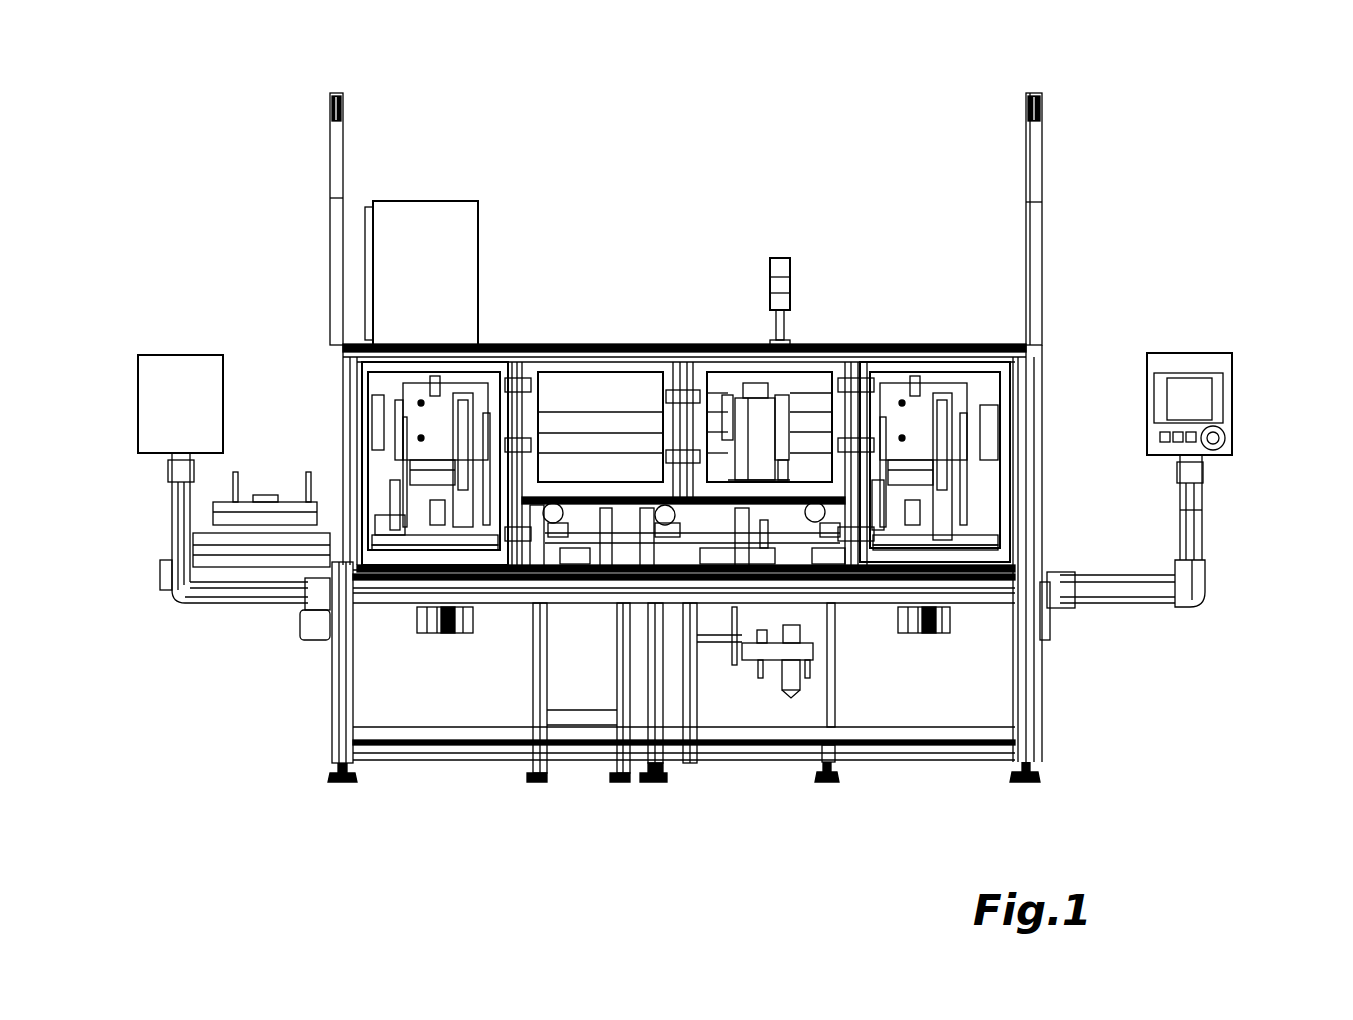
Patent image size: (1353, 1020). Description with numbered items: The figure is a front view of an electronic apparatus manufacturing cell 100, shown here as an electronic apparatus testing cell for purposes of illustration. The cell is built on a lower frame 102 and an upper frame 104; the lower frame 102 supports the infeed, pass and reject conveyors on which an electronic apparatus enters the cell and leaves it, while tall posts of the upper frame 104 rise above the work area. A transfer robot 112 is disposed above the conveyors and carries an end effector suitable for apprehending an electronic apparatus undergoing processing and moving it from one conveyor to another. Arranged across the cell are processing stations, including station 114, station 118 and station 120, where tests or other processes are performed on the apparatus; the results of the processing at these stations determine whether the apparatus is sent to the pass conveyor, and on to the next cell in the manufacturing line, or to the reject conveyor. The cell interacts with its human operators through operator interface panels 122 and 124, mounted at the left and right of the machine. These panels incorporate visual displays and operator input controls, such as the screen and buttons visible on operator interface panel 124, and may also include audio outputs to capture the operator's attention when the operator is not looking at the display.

The electronic apparatus manufacturing cell 100 is at (150, 52).
The lower frame 102 is at (332, 706).
The upper frame 104 is at (330, 280).
The transfer robot 112 is at (735, 392).
The station 114 is at (172, 527).
The station 118 is at (373, 416).
The station 120 is at (970, 473).
The operator interface panel 122 is at (203, 416).
The operator interface panel 124 is at (1215, 395).